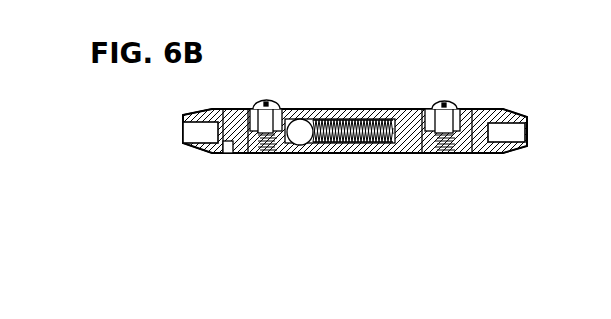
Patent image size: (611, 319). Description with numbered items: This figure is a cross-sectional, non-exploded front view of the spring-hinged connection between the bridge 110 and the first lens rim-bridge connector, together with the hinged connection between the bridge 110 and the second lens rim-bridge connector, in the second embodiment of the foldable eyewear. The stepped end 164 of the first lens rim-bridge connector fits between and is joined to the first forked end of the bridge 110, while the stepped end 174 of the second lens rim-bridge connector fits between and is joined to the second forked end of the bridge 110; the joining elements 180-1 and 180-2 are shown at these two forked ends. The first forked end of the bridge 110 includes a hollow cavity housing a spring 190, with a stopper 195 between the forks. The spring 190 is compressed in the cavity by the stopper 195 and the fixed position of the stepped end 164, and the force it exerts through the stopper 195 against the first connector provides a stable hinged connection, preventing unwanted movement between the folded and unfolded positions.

The bridge 110 is at (368, 109).
The stepped end 164 is at (195, 153).
The stepped end 174 is at (487, 153).
The first screw 180-1 is at (268, 100).
The second screw 180-2 is at (444, 102).
The spring 190 is at (343, 153).
The stopper 195 is at (302, 133).